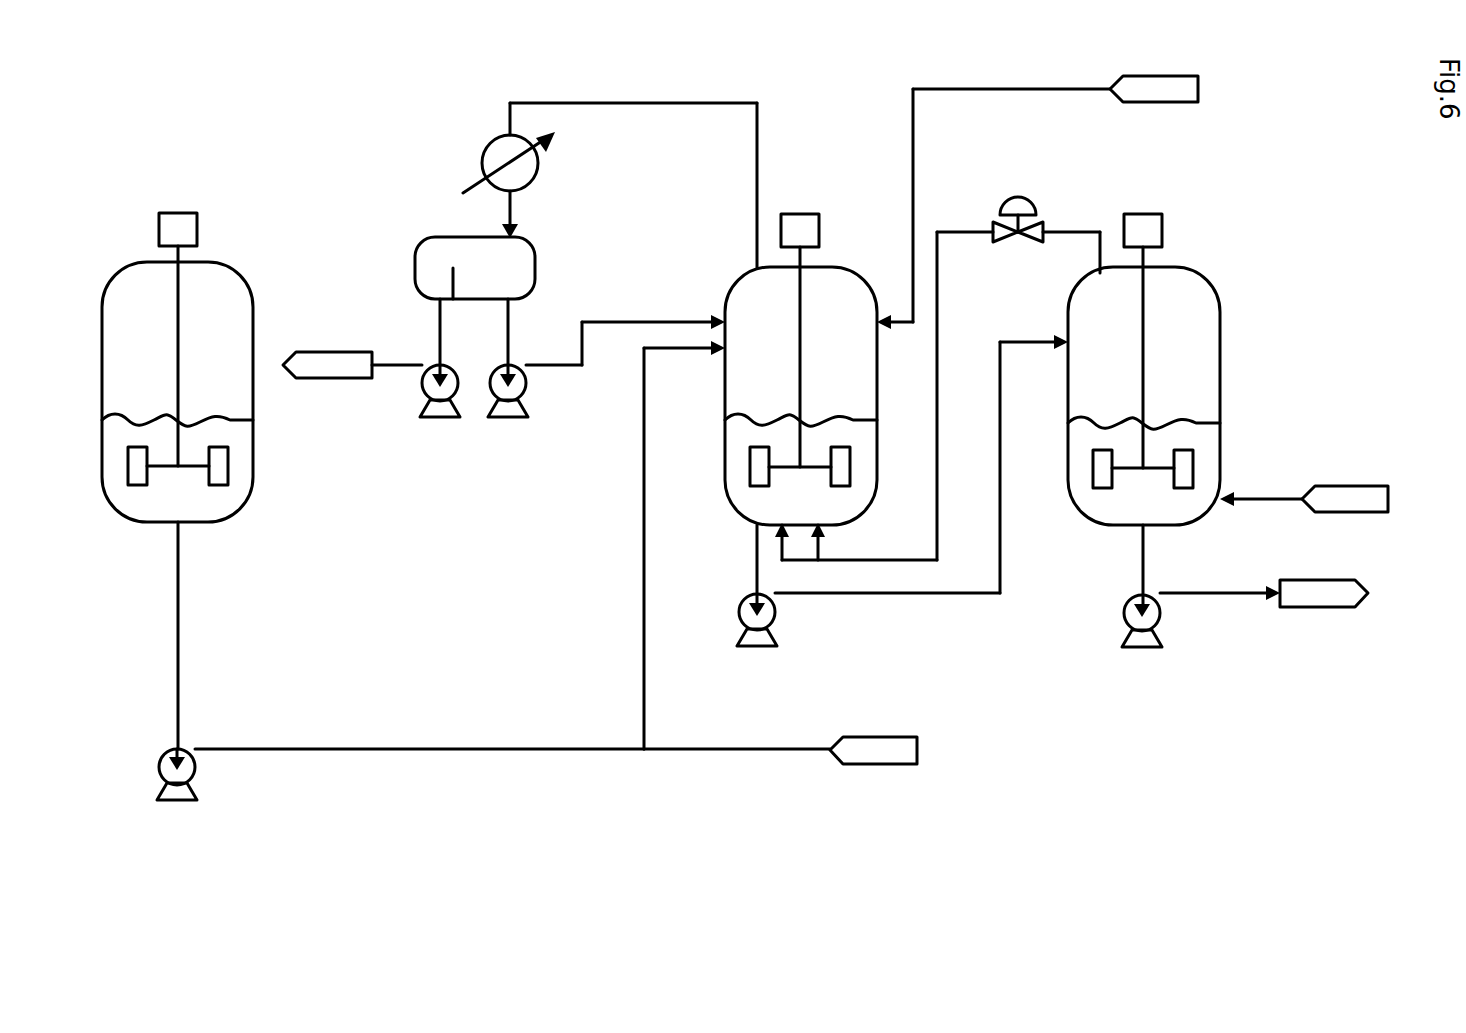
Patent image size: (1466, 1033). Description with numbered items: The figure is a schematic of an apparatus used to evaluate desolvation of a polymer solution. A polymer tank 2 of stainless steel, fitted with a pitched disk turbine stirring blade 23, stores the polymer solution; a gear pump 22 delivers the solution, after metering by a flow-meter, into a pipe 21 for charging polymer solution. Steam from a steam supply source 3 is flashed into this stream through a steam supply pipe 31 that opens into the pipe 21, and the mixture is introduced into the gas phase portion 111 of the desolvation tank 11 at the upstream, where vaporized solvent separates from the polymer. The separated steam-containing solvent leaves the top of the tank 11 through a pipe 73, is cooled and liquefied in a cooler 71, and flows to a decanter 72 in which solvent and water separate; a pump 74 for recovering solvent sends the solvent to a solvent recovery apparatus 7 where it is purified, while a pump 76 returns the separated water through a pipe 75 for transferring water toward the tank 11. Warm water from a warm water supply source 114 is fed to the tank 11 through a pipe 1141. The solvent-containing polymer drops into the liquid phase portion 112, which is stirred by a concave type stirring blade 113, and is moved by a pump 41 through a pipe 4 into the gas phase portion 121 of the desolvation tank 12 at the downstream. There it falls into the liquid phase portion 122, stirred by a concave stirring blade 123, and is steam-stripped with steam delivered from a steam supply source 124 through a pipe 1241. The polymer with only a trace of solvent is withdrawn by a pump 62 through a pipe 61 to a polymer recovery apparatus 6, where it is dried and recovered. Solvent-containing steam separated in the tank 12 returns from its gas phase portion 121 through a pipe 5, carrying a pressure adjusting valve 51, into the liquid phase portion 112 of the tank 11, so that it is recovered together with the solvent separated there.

The polymer tank 2 is at (236, 262).
The pipe for charging polymer solution 21 is at (195, 636).
The gear pump 22 is at (180, 800).
The stirring blade 23 is at (222, 480).
The steam supply source for polymer solution 3 is at (874, 766).
The steam supply pipe for polymer solution 31 is at (722, 758).
The pipe for transferring solvent-containing polymer 4 is at (876, 596).
The pump for transferring solvent-containing polymer 41 is at (754, 647).
The pipe for transferring solvent-containing steam 5 is at (962, 232).
The pressure adjusting valve 51 is at (1019, 196).
The polymer recovery apparatus 6 is at (1312, 608).
The pipe for transferring recovered polymer 61 is at (1209, 598).
The pump for transferring recovered polymer 62 is at (1140, 648).
The solvent recovery apparatus 7 is at (329, 380).
The cooler 71 is at (492, 140).
The decanter 72 is at (434, 236).
The pipe for transferring steam-containing solvent 73 is at (644, 104).
The pump for recovering solvent 74 is at (439, 418).
The pipe for transferring water 75 is at (570, 372).
The pump for transferring water 76 is at (506, 418).
The desolvation tank at the upstream 11 is at (840, 256).
The gas phase portion 111 is at (746, 290).
The liquid phase portion 112 is at (741, 430).
The stirring blade 113 is at (758, 482).
The warm water supply source 114 is at (1162, 76).
The pipe for supplying warm water 1141 is at (1010, 88).
The desolvation tank at the downstream 12 is at (1207, 272).
The gas phase portion 121 is at (1206, 337).
The liquid phase portion 122 is at (1206, 440).
The stirring blade 123 is at (1104, 484).
The steam supply source at the downstream 124 is at (1356, 514).
The pipe for supplying steam at the downstream 1241 is at (1248, 504).